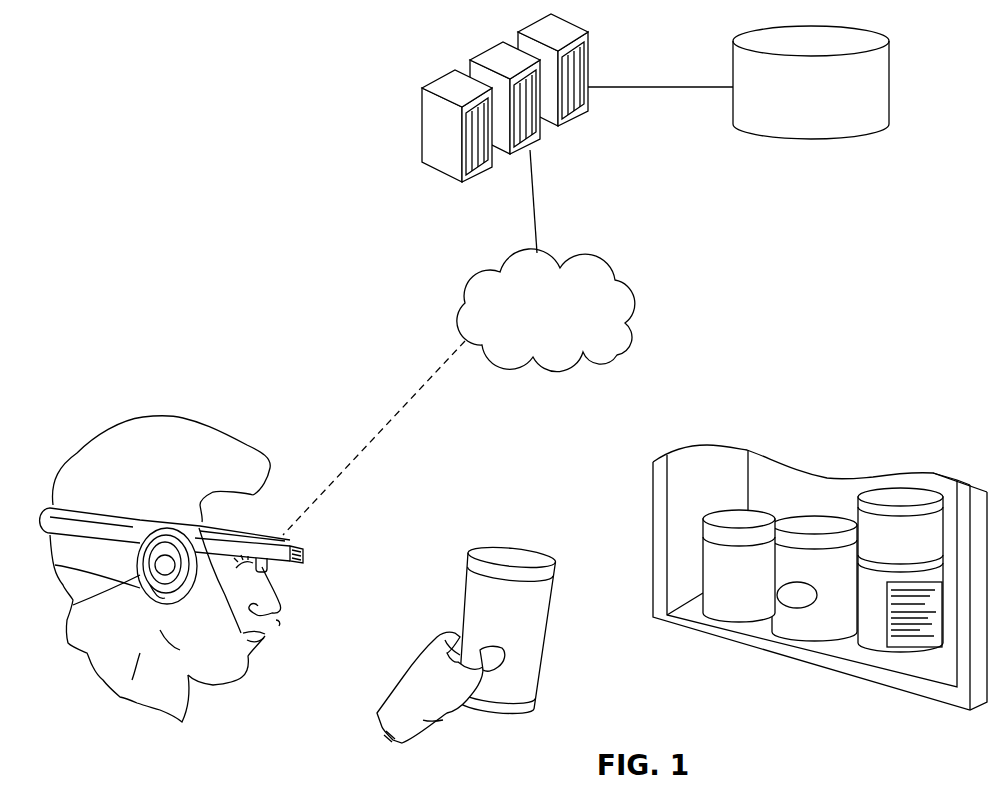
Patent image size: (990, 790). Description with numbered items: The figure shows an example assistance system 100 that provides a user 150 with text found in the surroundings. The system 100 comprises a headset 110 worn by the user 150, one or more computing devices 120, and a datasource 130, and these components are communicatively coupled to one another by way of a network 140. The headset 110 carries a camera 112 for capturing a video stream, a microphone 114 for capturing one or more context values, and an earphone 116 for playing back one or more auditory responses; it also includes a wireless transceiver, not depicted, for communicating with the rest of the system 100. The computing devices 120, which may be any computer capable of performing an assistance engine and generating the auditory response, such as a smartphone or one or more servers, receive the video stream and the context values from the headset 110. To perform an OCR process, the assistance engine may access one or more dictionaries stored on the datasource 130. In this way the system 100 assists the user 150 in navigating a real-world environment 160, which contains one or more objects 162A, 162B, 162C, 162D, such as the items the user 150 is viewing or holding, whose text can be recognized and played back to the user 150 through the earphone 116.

The system 100 is at (144, 100).
The headset 110 is at (58, 520).
The camera 112 is at (283, 540).
The microphone 114 is at (279, 624).
The earphone 116 is at (55, 565).
The computing devices 120 is at (427, 162).
The datasource 130 is at (760, 127).
The network 140 is at (630, 308).
The user 150 is at (247, 445).
The real-world environment 160 is at (542, 469).
The object 162A is at (507, 695).
The object 162B is at (717, 608).
The object 162C is at (787, 622).
The object 162D is at (877, 640).